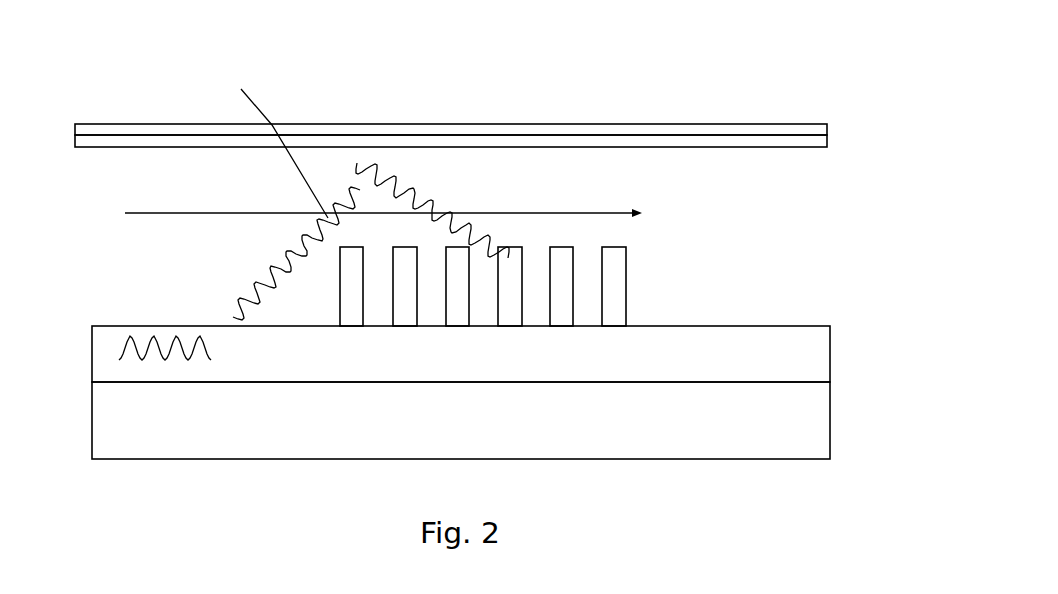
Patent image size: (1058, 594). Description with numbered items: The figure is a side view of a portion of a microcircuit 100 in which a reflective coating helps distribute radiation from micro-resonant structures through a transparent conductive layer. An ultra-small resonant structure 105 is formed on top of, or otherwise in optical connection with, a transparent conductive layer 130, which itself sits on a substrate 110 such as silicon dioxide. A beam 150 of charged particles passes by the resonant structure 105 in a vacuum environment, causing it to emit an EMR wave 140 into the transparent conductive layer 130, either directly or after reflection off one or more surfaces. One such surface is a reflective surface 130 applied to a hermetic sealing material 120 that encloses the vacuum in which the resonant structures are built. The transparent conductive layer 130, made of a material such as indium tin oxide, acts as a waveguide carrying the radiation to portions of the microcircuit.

The microcircuit 100 is at (770, 43).
The ultra-small resonant structure 105 is at (627, 255).
The substrate 110 is at (461, 420).
The hermetic sealing material 120 is at (313, 123).
The transparent conductive layer 130 is at (470, 144).
The EMR wave 140 is at (241, 89).
The beam 150 is at (175, 214).